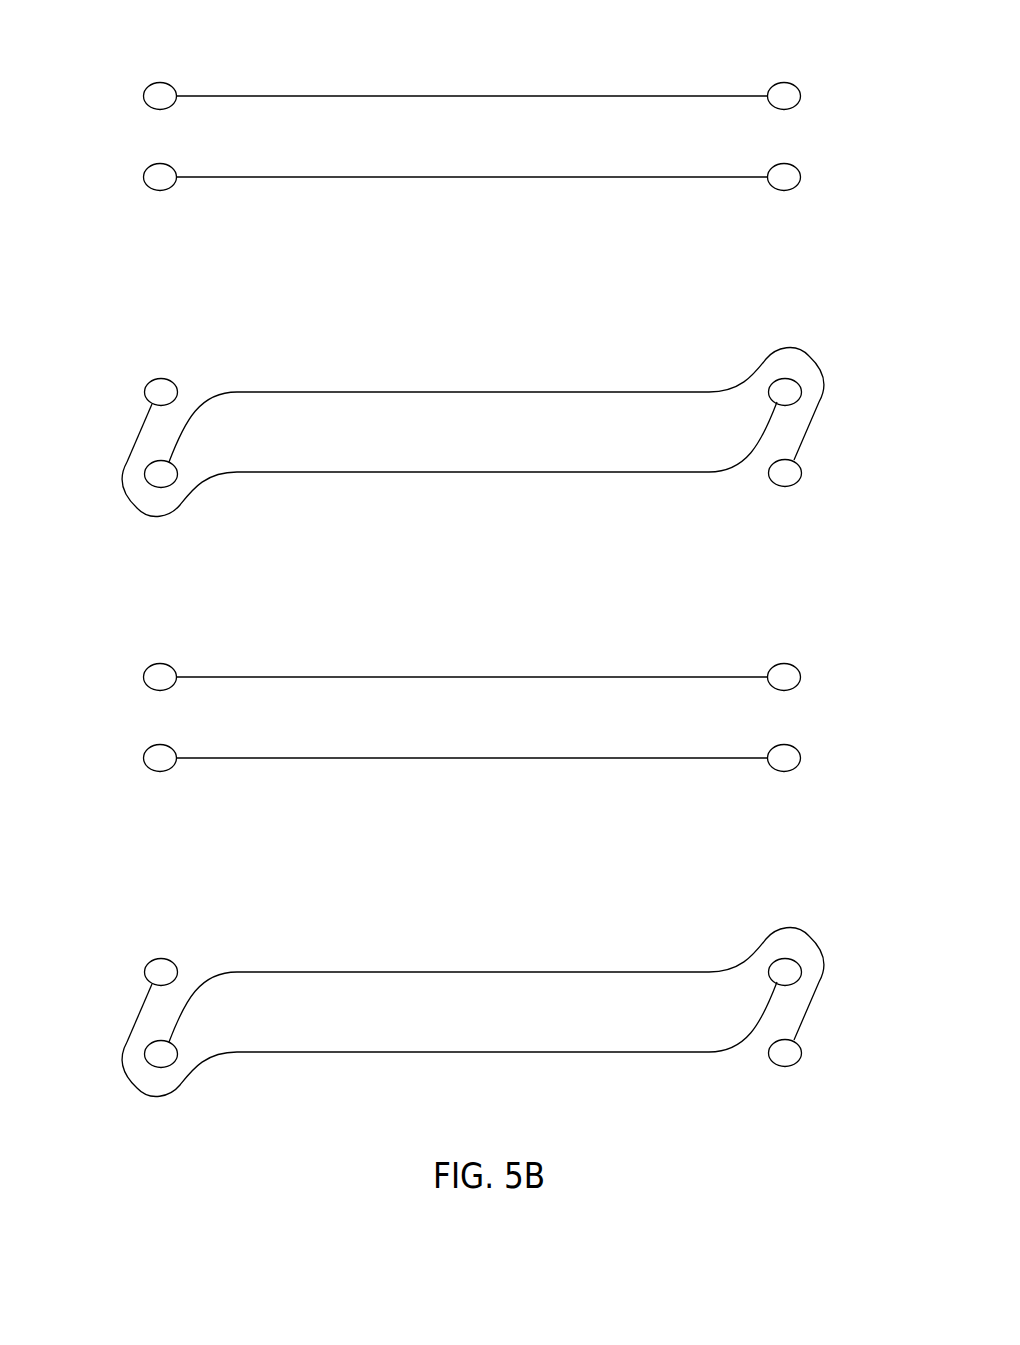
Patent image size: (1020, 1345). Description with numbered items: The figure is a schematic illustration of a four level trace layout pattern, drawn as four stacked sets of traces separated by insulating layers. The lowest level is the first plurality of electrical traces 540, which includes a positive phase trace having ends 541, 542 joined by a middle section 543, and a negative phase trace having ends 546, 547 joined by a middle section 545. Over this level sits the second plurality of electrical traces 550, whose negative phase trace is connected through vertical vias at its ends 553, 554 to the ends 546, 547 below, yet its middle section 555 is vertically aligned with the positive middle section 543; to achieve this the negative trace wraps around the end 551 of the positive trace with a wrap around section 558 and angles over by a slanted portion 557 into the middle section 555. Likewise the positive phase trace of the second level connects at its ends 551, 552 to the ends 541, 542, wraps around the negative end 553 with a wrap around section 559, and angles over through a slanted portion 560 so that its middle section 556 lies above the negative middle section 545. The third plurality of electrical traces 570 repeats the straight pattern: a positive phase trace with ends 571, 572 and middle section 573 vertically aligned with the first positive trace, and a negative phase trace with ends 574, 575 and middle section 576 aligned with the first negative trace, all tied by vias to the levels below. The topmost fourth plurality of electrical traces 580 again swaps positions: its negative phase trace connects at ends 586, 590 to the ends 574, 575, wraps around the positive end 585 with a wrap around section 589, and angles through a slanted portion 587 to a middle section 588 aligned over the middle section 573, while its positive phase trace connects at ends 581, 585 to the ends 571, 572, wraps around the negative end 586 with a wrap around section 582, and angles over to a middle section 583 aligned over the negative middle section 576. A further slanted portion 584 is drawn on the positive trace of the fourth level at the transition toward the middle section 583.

The first plurality of electrical traces 540 is at (447, 62).
The end of positive phase trace 541 is at (773, 110).
The end of positive phase trace 542 is at (170, 107).
The middle section 543 is at (460, 97).
The middle section 545 is at (460, 178).
The end of negative phase trace 546 is at (773, 191).
The end of negative phase trace 547 is at (170, 188).
The second plurality of electrical traces 550 is at (400, 380).
The end of positive phase trace 551 is at (147, 382).
The end of positive phase trace 552 is at (777, 402).
The end of negative phase trace 553 is at (144, 471).
The end of negative phase trace 554 is at (775, 488).
The middle section 555 is at (460, 393).
The middle section 556 is at (372, 473).
The slanted portion 557 is at (182, 435).
The wrap around section 558 is at (760, 358).
The wrap around section 559 is at (140, 432).
The slanted portion 560 is at (760, 442).
The third plurality of electrical traces 570 is at (447, 643).
The end of positive phase trace 571 is at (170, 688).
The end of positive phase trace 572 is at (773, 691).
The middle section 573 is at (460, 678).
The end of negative phase trace 574 is at (170, 769).
The end of negative phase trace 575 is at (773, 772).
The middle section 576 is at (460, 759).
The fourth plurality of electrical traces 580 is at (400, 960).
The end of positive phase trace 581 is at (147, 962).
The wrap around section 582 is at (165, 1097).
The middle section 583 is at (372, 1053).
The right bend segment 584 is at (760, 1022).
The end of positive phase trace 585 is at (777, 982).
The end of negative phase trace 586 is at (144, 1051).
The slanted portion 587 is at (182, 1015).
The middle section 588 is at (460, 973).
The wrap around section 589 is at (760, 938).
The end of negative phase trace 590 is at (775, 1068).